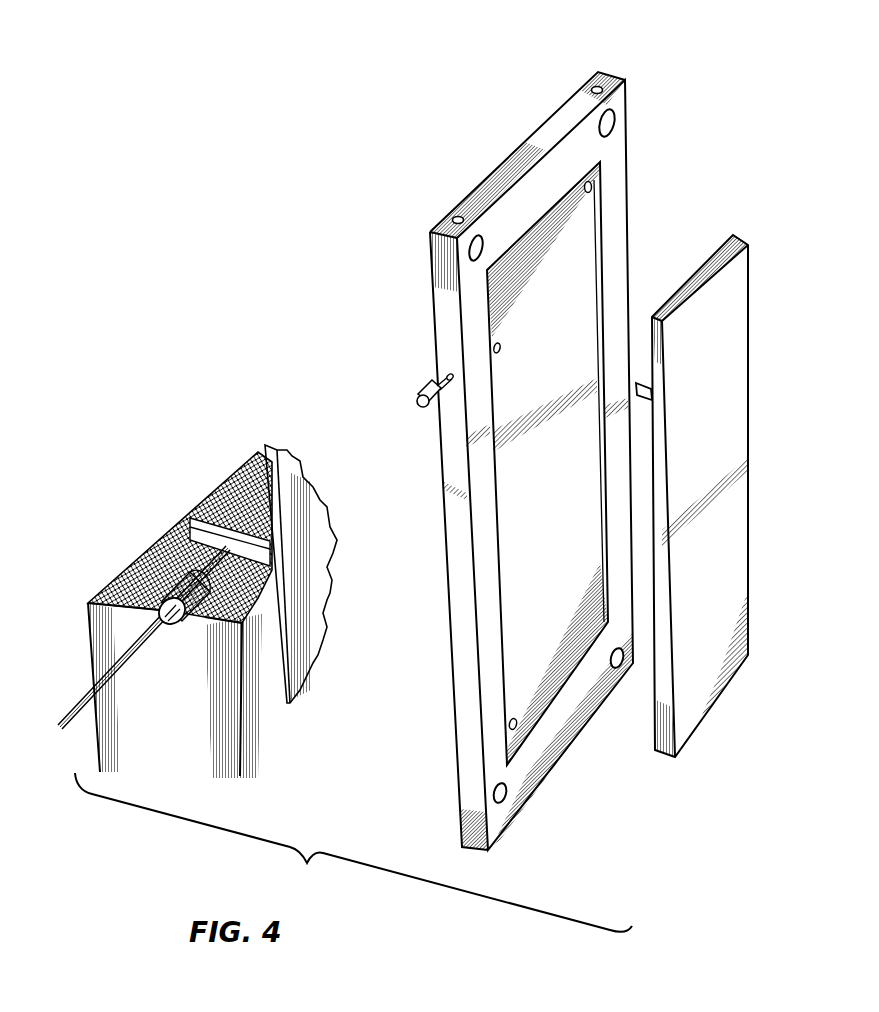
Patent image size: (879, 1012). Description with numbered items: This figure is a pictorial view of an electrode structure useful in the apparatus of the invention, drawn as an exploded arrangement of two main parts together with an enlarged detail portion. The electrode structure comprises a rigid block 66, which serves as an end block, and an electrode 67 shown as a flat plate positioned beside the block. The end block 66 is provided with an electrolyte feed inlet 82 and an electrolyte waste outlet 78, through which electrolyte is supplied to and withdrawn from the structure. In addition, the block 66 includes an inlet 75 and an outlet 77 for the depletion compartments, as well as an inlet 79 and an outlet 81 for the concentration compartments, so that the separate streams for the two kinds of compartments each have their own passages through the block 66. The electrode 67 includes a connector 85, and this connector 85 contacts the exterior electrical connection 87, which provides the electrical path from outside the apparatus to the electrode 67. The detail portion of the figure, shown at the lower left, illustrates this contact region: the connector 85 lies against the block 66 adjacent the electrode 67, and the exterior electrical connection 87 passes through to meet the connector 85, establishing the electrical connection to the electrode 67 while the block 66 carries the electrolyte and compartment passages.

The rigid block 66 is at (620, 135).
The electrode 67 is at (723, 585).
The inlet 75 is at (458, 214).
The outlet 77 is at (619, 668).
The electrolyte waste outlet 78 is at (516, 728).
The inlet 79 is at (606, 74).
The outlet 81 is at (505, 803).
The electrolyte feed inlet 82 is at (592, 186).
The connector 85 is at (636, 380).
The exterior electrical connection 87 is at (425, 390).